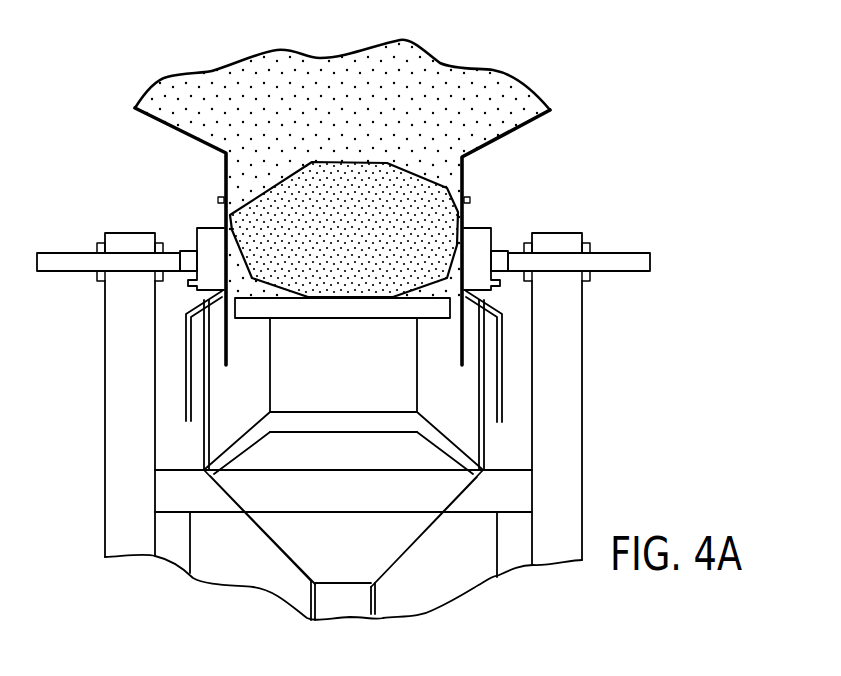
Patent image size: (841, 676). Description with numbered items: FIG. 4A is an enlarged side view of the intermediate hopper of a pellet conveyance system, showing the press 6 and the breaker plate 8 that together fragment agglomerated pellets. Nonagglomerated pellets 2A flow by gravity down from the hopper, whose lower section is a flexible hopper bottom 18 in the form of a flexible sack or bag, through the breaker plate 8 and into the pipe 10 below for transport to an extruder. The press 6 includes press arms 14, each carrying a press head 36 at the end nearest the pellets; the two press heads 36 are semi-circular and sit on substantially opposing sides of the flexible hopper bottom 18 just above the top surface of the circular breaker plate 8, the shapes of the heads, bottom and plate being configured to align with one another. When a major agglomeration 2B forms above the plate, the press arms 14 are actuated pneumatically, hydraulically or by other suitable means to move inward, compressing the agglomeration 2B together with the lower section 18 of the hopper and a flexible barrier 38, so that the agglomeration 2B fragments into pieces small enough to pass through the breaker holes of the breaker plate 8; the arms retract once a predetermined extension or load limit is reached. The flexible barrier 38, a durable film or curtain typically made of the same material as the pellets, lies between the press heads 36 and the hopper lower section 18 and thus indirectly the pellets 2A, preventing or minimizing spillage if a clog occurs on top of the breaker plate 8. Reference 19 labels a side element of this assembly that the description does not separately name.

The nonagglomerated pellets 2A is at (443, 63).
The major agglomeration 2B is at (460, 183).
The flexible hopper bottom 18 is at (222, 168).
The press 6 is at (186, 243).
The press head 36 is at (495, 243).
The press arm 14 is at (623, 253).
The flexible barrier 38 is at (498, 340).
The left side shroud plate 19 is at (203, 387).
The breaker plate 8 is at (433, 318).
The pipe 10 is at (365, 597).